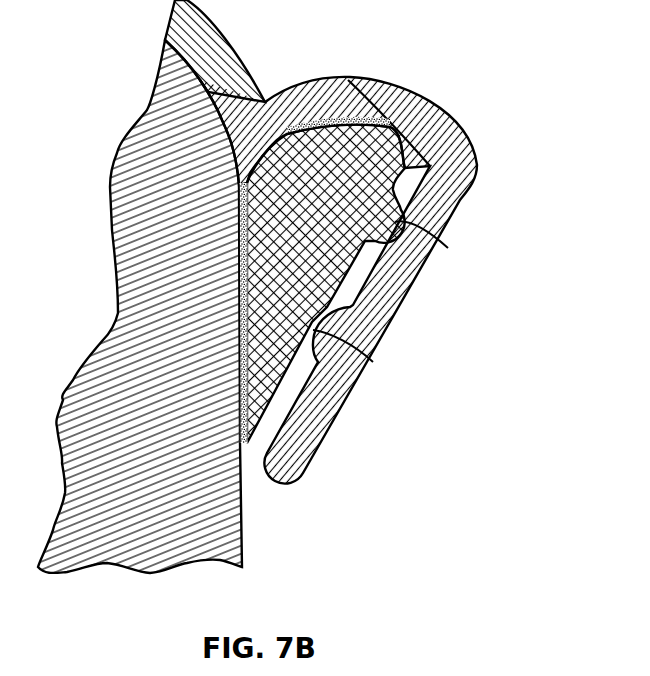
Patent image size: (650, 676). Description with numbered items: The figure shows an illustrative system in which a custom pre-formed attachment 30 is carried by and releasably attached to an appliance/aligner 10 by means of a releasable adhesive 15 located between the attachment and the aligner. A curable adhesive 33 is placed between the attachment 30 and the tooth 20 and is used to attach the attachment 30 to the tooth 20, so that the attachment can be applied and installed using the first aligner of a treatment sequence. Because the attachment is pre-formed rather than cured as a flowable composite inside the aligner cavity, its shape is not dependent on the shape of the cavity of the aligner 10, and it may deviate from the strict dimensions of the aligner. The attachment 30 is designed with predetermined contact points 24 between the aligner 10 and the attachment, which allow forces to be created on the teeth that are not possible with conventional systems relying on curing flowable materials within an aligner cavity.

The appliance/aligner 10 is at (450, 190).
The releasable adhesive 15 is at (347, 117).
The tooth 20 is at (173, 367).
The predetermined contact points 24 is at (448, 248).
The custom pre-formed attachment 30 is at (323, 231).
The curable adhesive 33 is at (245, 445).